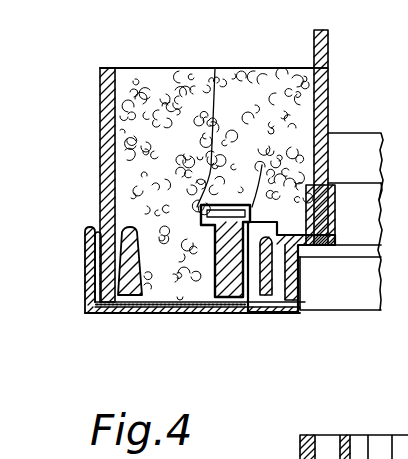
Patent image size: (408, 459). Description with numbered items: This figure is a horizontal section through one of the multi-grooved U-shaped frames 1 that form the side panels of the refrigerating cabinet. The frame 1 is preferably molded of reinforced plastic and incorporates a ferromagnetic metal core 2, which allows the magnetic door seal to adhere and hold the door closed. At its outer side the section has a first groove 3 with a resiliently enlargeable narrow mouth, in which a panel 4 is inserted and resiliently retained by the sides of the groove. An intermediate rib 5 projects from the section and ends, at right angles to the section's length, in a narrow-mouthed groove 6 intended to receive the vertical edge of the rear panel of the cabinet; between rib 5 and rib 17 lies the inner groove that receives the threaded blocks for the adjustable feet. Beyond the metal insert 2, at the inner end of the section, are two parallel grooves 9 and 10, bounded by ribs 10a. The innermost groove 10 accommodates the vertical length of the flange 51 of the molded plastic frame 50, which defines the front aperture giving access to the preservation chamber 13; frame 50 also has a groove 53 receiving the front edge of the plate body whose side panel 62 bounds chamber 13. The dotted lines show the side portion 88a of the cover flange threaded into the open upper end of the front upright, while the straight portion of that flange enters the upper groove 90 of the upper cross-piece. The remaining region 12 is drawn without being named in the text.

The U-shaped frame 1 is at (108, 320).
The ferromagnetic metal core 2 is at (86, 252).
The first groove 3 is at (118, 226).
The panel 4 is at (114, 68).
The intermediate rib 5 is at (212, 68).
The groove 6 is at (261, 172).
The groove 9 is at (255, 290).
The groove 10 is at (275, 312).
The rib 10a is at (302, 258).
The support body 12 is at (357, 306).
The preservation chamber 13 is at (343, 148).
The rib 17 is at (132, 316).
The frame 50 is at (335, 230).
The flange 51 is at (280, 282).
The groove 53 is at (342, 137).
The side panel 62 is at (329, 33).
The side portion of discontinuous flange 88a is at (197, 313).
The upper groove 90 is at (325, 447).